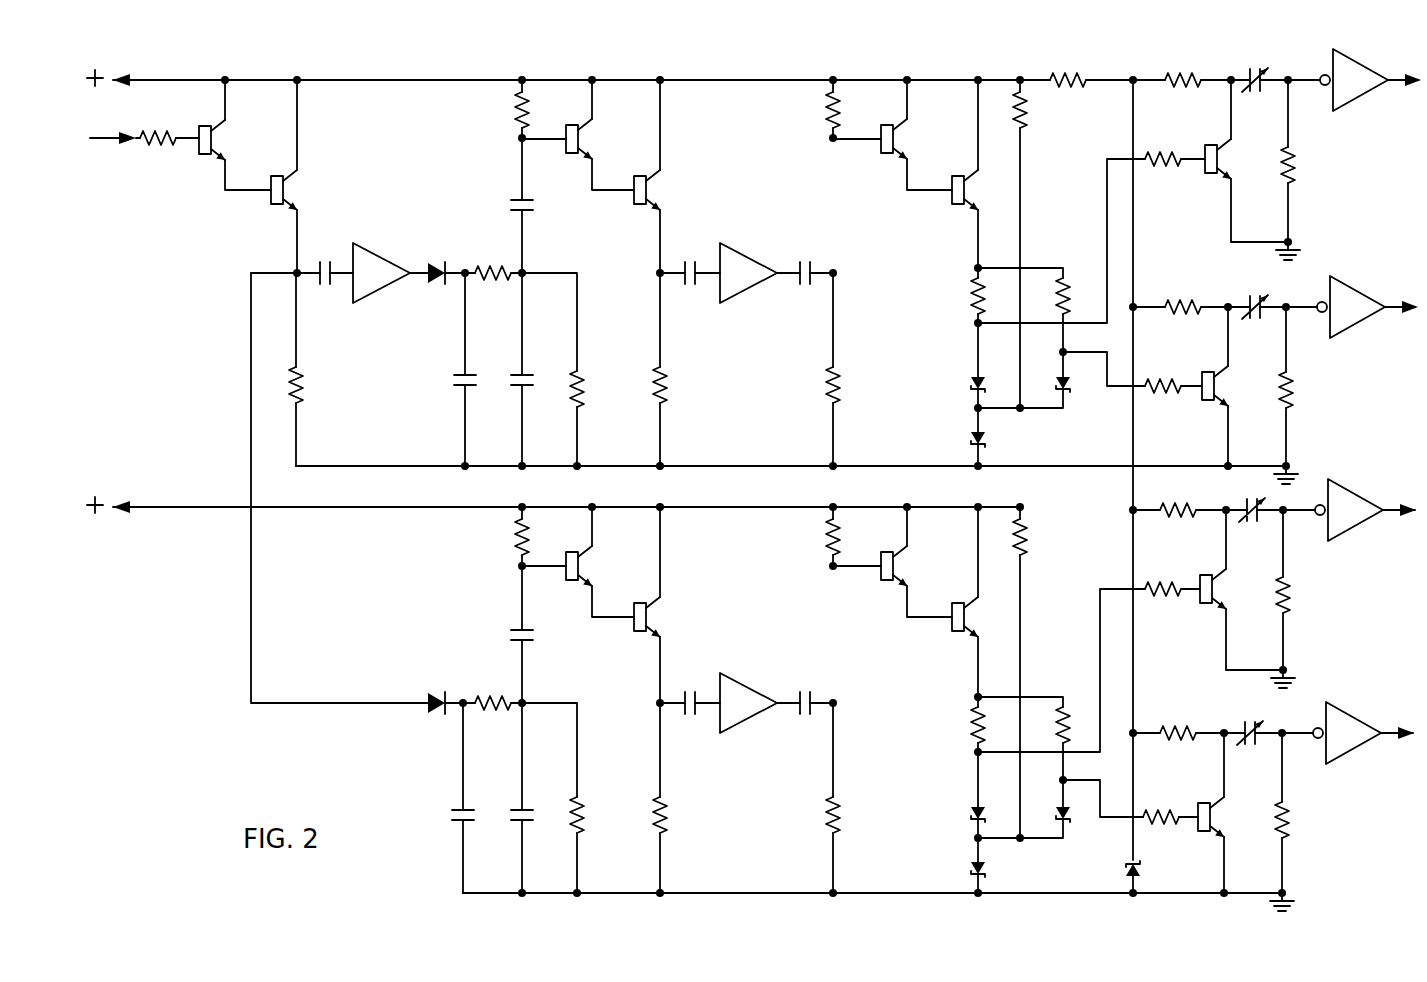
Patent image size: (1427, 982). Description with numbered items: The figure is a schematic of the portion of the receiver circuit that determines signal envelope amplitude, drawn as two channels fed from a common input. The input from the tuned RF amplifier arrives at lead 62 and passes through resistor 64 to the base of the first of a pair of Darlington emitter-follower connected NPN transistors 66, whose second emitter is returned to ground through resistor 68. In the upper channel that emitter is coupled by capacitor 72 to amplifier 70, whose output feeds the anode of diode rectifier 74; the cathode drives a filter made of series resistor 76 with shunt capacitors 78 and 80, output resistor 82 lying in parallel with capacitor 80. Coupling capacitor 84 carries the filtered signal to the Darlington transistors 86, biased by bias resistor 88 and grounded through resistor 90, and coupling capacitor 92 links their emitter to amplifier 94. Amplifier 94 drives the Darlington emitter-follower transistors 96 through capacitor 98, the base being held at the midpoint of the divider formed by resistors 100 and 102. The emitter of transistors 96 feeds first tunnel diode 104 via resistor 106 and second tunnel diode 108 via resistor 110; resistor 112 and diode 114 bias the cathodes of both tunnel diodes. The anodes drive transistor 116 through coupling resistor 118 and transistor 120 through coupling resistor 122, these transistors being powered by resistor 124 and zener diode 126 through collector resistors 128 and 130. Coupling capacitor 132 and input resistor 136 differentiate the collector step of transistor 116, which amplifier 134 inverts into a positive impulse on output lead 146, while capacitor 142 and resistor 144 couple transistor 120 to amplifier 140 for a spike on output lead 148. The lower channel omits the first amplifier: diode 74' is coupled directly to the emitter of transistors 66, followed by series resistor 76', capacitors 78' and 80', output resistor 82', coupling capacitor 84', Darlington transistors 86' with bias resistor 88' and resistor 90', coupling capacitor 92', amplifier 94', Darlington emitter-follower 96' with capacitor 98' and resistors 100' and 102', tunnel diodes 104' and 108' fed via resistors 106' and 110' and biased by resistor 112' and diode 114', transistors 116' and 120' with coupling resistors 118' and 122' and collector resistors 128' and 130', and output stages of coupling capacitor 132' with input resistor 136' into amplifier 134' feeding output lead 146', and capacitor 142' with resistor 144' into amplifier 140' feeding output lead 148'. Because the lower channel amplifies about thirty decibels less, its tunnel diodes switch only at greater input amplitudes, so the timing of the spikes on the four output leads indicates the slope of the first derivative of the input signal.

The lead 62 is at (97, 148).
The resistor 64 is at (150, 148).
The pair of Darlington emitter-follower connected NPN transistors 66 is at (266, 184).
The resistor 68 is at (303, 385).
The amplifier 70 is at (377, 300).
The capacitor 72 is at (327, 290).
The diode rectifier 74 is at (437, 300).
The series resistor 76 is at (493, 255).
The capacitor 78 is at (447, 369).
The capacitor 80 is at (510, 369).
The output resistor 82 is at (572, 369).
The coupling capacitor 84 is at (500, 205).
The pair of Darlington emitter-follower connected transistors 86 is at (591, 176).
The bias resistor 88 is at (498, 109).
The resistor 90 is at (683, 369).
The coupling capacitor 92 is at (690, 297).
The amplifier 94 is at (749, 255).
The Darlington emitter-follower silicon NPN transistors 96 is at (905, 174).
The capacitor 98 is at (805, 297).
The resistor 100 is at (809, 109).
The resistor 102 is at (809, 369).
The first tunnel diode 104 is at (948, 365).
The resistor 106 is at (951, 295).
The second tunnel diode 108 is at (1048, 386).
The resistor 110 is at (1061, 309).
The resistor 112 is at (1047, 244).
The diode 114 is at (948, 437).
The transistor 116 is at (1226, 161).
The coupling resistor 118 is at (1088, 218).
The transistor 120 is at (1195, 386).
The coupling resistor 122 is at (1172, 366).
The resistor 124 is at (1078, 75).
The zener diode 126 is at (1122, 870).
The collector resistor 128 is at (1195, 63).
The collector resistor 130 is at (1190, 288).
The coupling capacitor 132 is at (1279, 62).
The amplifier 134 is at (1370, 91).
The input resistor 136 is at (1313, 161).
The amplifier 140 is at (1367, 316).
The capacitor 142 is at (1265, 289).
The resistor 144 is at (1316, 386).
The output lead 146 is at (1390, 58).
The output lead 148 is at (1388, 284).
The diode 74' is at (357, 493).
The series resistor 76' is at (492, 682).
The capacitor 78' is at (439, 798).
The capacitor 80' is at (505, 798).
The output resistor 82' is at (574, 798).
The coupling capacitor 84' is at (494, 634).
The pair of Darlington emitter-follower connected transistors 86' is at (591, 605).
The bias resistor 88' is at (493, 536).
The resistor 90' is at (685, 798).
The coupling capacitor 92' is at (690, 725).
The amplifier 94' is at (750, 686).
The Darlington emitter-follower 96' is at (905, 602).
The capacitor 98' is at (805, 725).
The resistor 100' is at (806, 536).
The resistor 102' is at (806, 798).
The tunnel diode 104' is at (945, 795).
The resistor 106' is at (947, 724).
The tunnel diode 108' is at (1051, 814).
The resistor 110' is at (1060, 745).
The resistor 112' is at (1051, 672).
The diode 114' is at (945, 865).
The transistor 116' is at (1221, 590).
The coupling resistor 118' is at (1088, 646).
The transistor 120' is at (1192, 813).
The coupling resistor 122' is at (1171, 796).
The collector resistor 128' is at (1169, 493).
The collector resistor 130' is at (1189, 714).
The coupling capacitor 132' is at (1238, 496).
The amplifier 134' is at (1365, 522).
The input resistor 136' is at (1312, 590).
The amplifier 140' is at (1363, 743).
The capacitor 142' is at (1265, 714).
The resistor 144' is at (1316, 813).
The output lead 146' is at (1387, 486).
The output lead 148' is at (1386, 709).